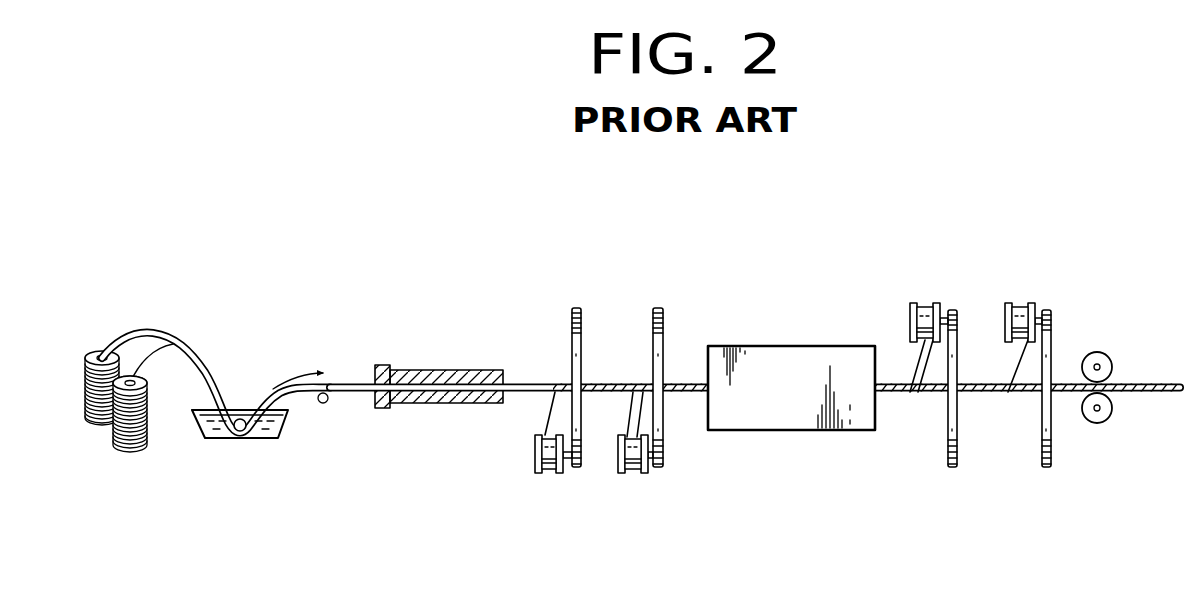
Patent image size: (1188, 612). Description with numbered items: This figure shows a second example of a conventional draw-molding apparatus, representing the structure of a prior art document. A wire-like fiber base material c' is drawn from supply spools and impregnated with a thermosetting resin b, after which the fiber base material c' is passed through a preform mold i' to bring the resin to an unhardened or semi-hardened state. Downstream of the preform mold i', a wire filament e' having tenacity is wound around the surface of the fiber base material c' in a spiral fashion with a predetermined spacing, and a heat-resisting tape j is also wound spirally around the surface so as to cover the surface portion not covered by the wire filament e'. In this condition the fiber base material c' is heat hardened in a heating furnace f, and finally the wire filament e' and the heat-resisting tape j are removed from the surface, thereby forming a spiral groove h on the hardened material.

The wire-like fiber base material c' is at (207, 381).
The thermosetting resin b is at (268, 438).
The preform mold i' is at (439, 365).
The wire filament e' is at (772, 388).
The heat-resisting tape j is at (622, 415).
The heating furnace f is at (808, 353).
The spiral groove h is at (1153, 392).